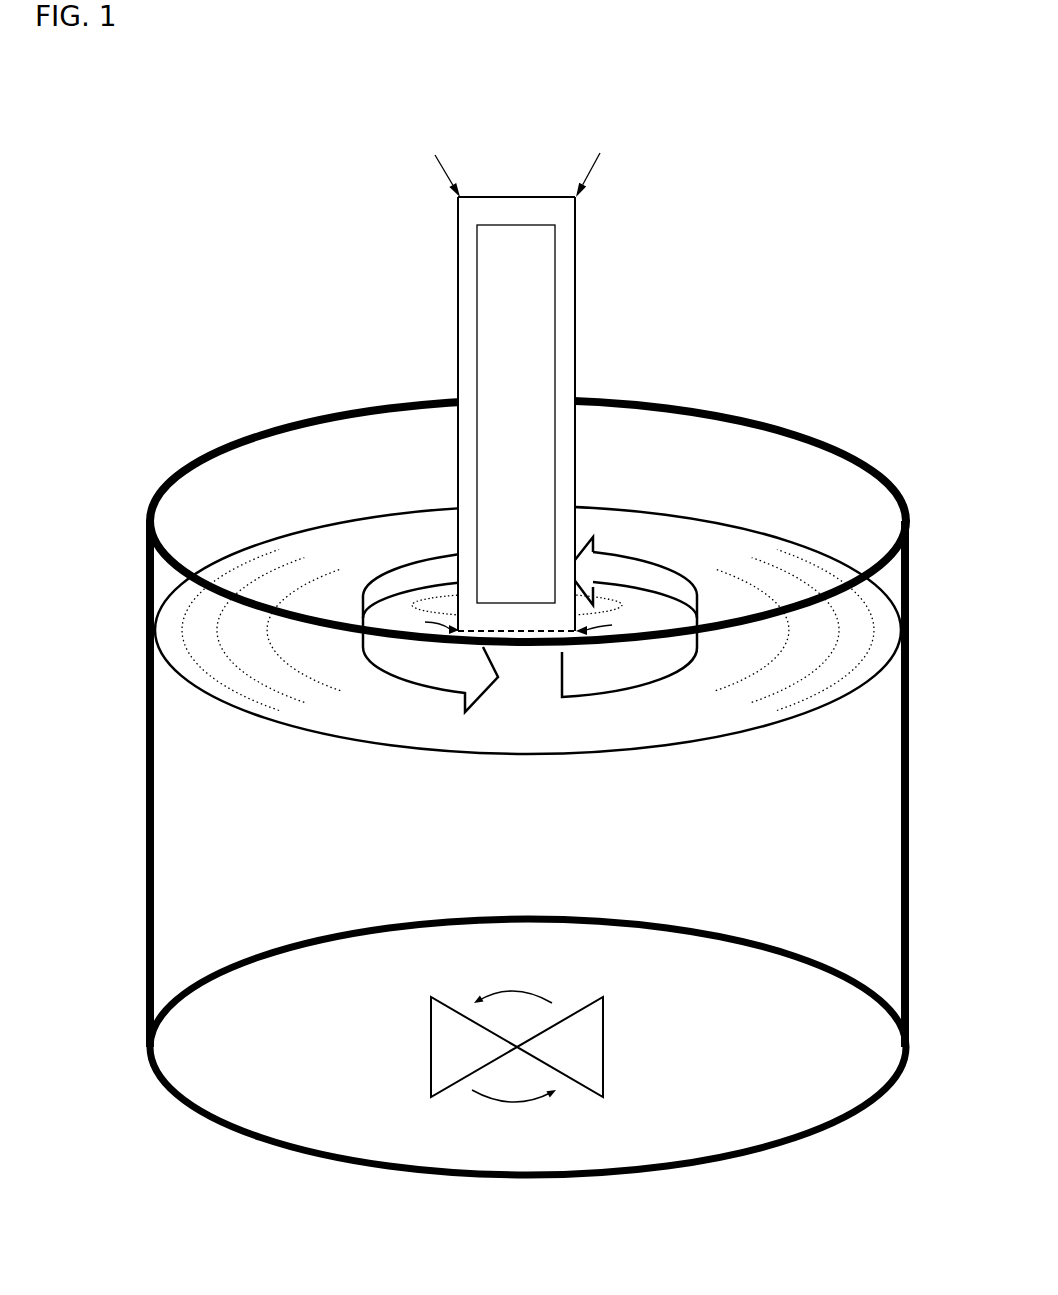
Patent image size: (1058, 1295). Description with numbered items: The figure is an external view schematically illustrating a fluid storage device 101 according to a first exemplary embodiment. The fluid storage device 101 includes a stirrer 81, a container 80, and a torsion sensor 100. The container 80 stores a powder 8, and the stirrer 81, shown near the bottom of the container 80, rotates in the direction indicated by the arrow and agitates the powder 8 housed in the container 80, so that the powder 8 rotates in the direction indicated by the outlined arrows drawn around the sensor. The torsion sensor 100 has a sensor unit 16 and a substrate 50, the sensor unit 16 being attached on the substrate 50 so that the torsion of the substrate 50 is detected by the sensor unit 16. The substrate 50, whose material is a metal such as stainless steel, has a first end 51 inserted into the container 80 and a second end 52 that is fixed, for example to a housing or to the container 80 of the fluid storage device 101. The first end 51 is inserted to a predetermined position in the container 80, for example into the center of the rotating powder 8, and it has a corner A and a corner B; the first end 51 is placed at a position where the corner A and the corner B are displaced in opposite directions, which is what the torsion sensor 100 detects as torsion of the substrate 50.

The fluid storage device 101 is at (818, 132).
The torsion sensor 100 is at (558, 414).
The substrate 50 is at (570, 263).
The second end 52 is at (547, 207).
The sensor unit 16 is at (513, 252).
The first end 51 is at (508, 608).
The container 80 is at (271, 427).
The powder 8 is at (323, 557).
The stirrer 81 is at (443, 1038).